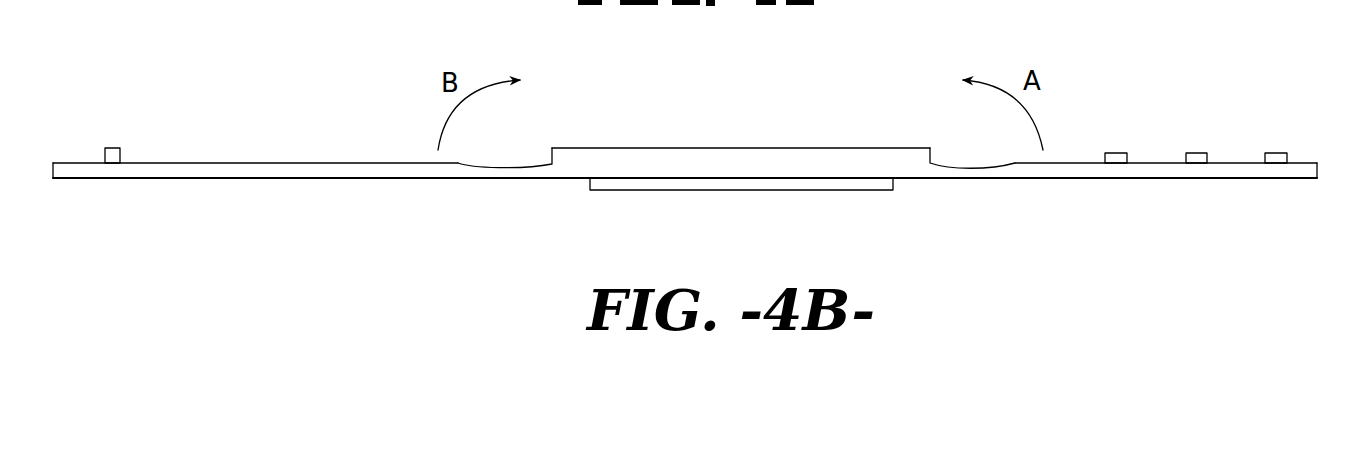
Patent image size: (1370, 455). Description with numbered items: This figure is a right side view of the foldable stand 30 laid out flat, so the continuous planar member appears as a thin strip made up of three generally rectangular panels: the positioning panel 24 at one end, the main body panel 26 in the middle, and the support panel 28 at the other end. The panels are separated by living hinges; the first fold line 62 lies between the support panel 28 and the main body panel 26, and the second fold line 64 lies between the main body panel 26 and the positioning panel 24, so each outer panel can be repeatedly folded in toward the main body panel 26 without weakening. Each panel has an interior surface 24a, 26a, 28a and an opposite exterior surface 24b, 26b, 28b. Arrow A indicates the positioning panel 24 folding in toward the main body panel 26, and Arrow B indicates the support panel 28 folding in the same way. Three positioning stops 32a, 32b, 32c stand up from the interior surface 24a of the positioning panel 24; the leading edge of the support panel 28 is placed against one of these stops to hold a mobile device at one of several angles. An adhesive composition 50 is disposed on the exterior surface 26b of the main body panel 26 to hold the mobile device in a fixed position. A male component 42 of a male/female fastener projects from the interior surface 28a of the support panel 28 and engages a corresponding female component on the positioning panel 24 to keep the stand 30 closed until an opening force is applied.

The positioning panel 24 is at (1105, 141).
The interior surface of positioning panel 24a is at (1233, 160).
The exterior surface of positioning panel 24b is at (1222, 180).
The main body panel 26 is at (741, 175).
The interior surface of main body panel 26a is at (698, 148).
The exterior surface of main body panel 26b is at (640, 178).
The support panel 28 is at (321, 181).
The interior surface of support panel 28a is at (238, 162).
The exterior surface of support panel 28b is at (177, 180).
The foldable stand 30 is at (685, 126).
The first positioning stop 32a is at (1115, 152).
The second positioning stop 32b is at (1195, 152).
The third positioning stop 32c is at (1272, 152).
The male component of fastener 42 is at (112, 147).
The adhesive composition 50 is at (870, 182).
The first fold line 62 is at (502, 167).
The second fold line 64 is at (970, 170).